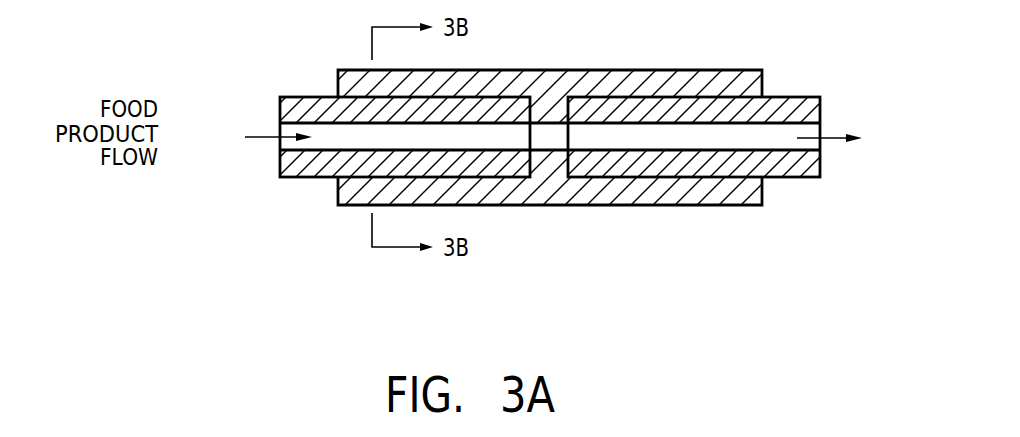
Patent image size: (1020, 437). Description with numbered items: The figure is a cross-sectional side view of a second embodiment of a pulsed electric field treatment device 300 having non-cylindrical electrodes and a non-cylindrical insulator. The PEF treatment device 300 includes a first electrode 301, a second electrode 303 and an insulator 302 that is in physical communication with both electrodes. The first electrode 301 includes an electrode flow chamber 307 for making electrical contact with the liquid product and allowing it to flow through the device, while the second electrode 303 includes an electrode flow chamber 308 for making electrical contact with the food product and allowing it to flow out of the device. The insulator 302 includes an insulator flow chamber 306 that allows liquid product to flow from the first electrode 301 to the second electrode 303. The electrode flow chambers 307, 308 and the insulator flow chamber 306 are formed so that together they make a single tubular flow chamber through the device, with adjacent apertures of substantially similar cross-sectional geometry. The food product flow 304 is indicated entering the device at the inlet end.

The pulsed electric field treatment device 300 is at (258, 194).
The first electrode 301 is at (293, 102).
The insulator 302 is at (555, 80).
The second electrode 303 is at (818, 98).
The food product flow direction 304 is at (257, 138).
The insulator flow chamber 306 is at (540, 139).
The electrode flow chamber 307 is at (313, 170).
The electrode flow chamber 308 is at (767, 138).